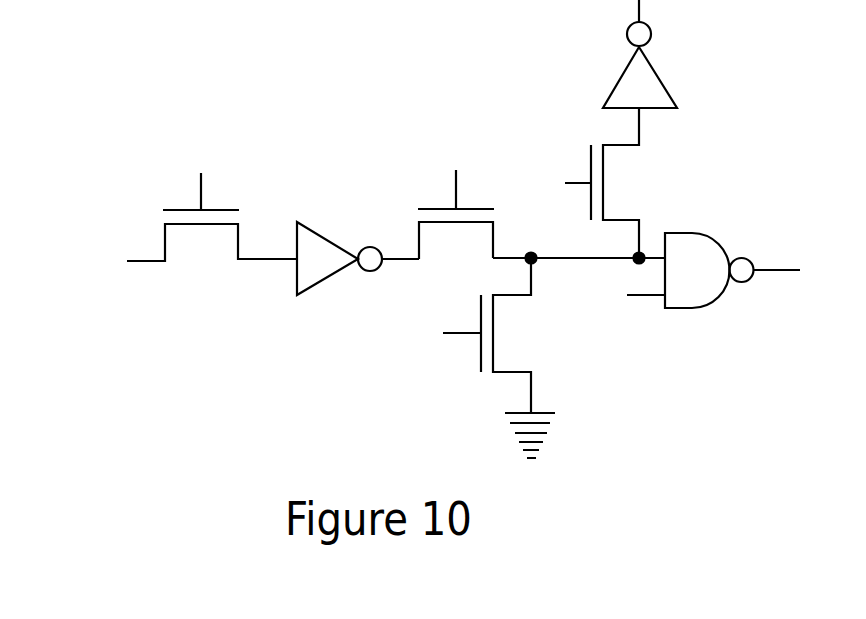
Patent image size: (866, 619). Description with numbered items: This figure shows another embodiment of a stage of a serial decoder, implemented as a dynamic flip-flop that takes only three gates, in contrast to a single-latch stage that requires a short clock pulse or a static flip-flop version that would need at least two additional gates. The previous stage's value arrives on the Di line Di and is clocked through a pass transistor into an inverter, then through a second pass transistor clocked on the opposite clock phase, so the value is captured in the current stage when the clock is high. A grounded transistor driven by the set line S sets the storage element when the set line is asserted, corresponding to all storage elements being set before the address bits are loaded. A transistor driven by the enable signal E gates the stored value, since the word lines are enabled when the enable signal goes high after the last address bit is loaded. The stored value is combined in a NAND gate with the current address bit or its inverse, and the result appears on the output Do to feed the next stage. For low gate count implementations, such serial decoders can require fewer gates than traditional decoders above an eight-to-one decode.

The Di line Di is at (194, 246).
The −S line S is at (477, 335).
The enable signal E is at (584, 183).
The data output Do is at (802, 260).